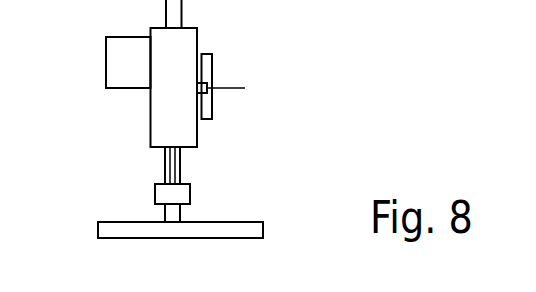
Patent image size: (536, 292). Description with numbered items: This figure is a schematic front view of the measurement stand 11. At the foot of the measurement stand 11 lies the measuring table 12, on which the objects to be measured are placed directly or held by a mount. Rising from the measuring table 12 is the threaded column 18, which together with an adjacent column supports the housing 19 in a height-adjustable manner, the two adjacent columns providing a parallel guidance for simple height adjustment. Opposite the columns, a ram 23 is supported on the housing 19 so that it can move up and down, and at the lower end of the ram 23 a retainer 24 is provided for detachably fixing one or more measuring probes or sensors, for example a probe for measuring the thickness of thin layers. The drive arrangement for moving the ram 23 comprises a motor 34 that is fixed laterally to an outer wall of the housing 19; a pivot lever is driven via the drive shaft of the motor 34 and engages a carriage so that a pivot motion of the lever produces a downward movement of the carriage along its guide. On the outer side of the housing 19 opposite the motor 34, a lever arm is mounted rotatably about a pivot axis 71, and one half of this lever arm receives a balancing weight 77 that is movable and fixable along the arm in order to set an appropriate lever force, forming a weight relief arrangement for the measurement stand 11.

The measurement stand 11 is at (282, 62).
The measuring table 12 is at (265, 228).
The threaded column 18 is at (178, 216).
The housing 19 is at (148, 110).
The ram 23 is at (171, 163).
The retainer 24 is at (155, 190).
The motor 34 is at (112, 58).
The pivot axis 71 is at (230, 90).
The balancing weight 77 is at (207, 70).